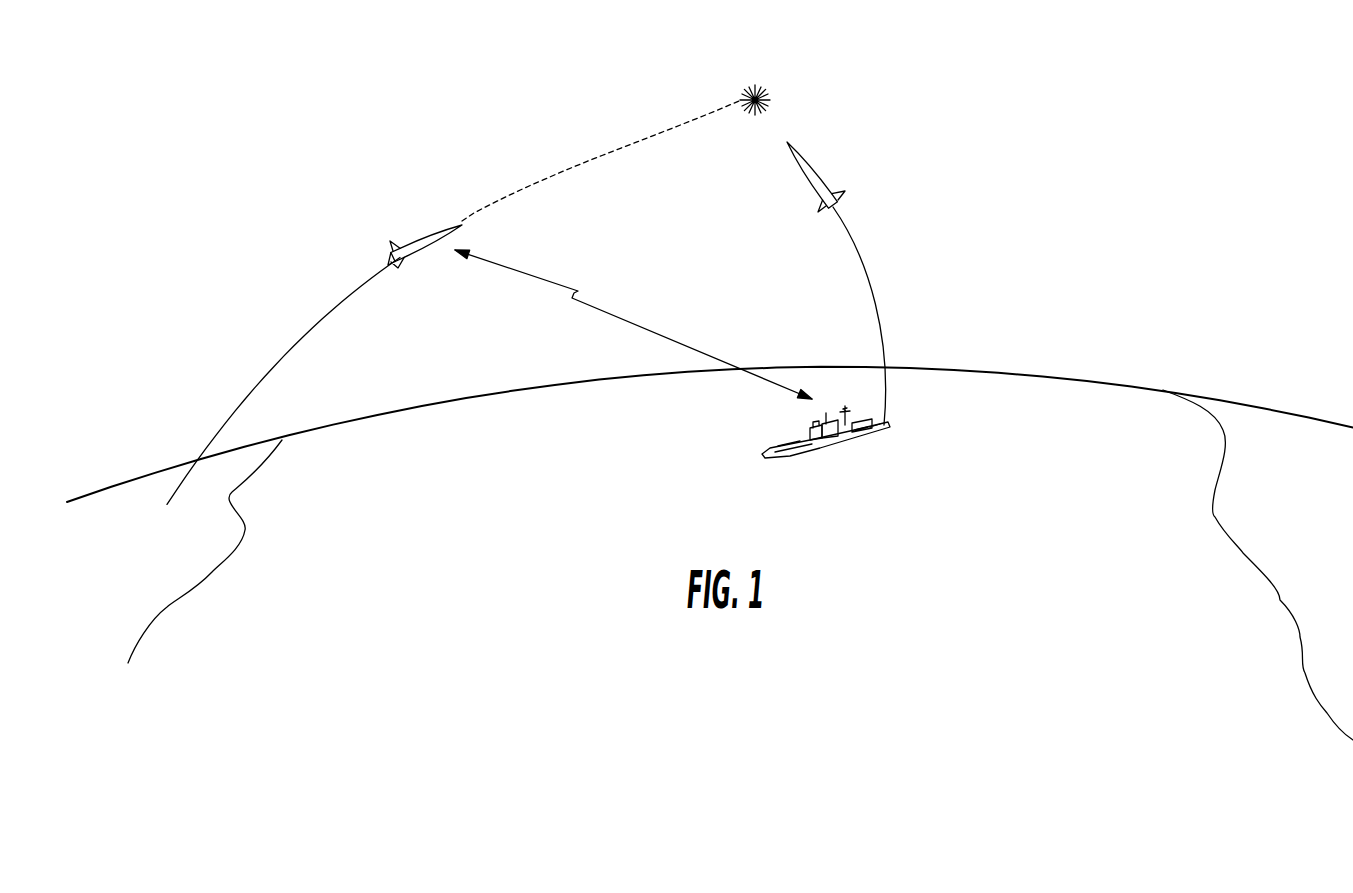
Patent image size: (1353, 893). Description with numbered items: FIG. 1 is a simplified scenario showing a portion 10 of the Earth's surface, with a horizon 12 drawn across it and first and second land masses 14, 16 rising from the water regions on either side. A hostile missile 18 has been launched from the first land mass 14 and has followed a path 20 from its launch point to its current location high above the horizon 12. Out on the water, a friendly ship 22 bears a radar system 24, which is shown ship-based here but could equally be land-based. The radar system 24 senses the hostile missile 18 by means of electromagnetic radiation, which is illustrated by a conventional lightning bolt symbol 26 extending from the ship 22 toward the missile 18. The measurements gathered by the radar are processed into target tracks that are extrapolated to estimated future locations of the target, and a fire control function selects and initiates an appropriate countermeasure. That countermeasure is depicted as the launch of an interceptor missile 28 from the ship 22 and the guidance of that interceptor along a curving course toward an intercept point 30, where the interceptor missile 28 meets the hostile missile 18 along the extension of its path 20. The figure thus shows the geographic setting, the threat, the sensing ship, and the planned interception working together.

The portion of the Earth's surface 10 is at (712, 516).
The horizon 12 is at (480, 400).
The first land mass 14 is at (212, 573).
The second land mass 16 is at (1240, 557).
The hostile missile 18 is at (423, 257).
The path 20 is at (289, 350).
The friendly ship 22 is at (821, 443).
The radar system 24 is at (810, 427).
The lightning bolt symbol 26 is at (613, 320).
The interceptor missile 28 is at (803, 175).
The intercept point 30 is at (760, 113).